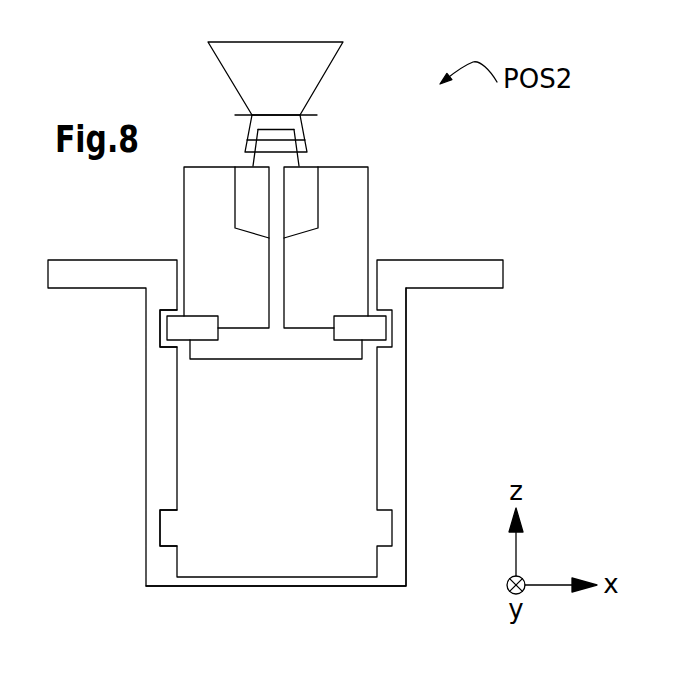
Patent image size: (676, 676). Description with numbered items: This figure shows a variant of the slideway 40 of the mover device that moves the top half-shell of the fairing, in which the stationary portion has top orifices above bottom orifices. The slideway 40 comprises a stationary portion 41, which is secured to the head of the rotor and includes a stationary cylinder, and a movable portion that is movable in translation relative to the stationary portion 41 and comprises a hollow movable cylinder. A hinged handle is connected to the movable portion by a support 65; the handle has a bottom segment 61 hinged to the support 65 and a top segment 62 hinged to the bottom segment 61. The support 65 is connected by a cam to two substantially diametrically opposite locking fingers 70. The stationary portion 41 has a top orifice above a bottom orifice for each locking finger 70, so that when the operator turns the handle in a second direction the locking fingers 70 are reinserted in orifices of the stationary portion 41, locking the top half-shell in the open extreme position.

The slideway 40 is at (153, 610).
The stationary portion 41 is at (408, 563).
The bottom segment 61 is at (303, 125).
The top segment 62 is at (331, 63).
The support 65 is at (300, 158).
The locking finger 70 is at (203, 322).